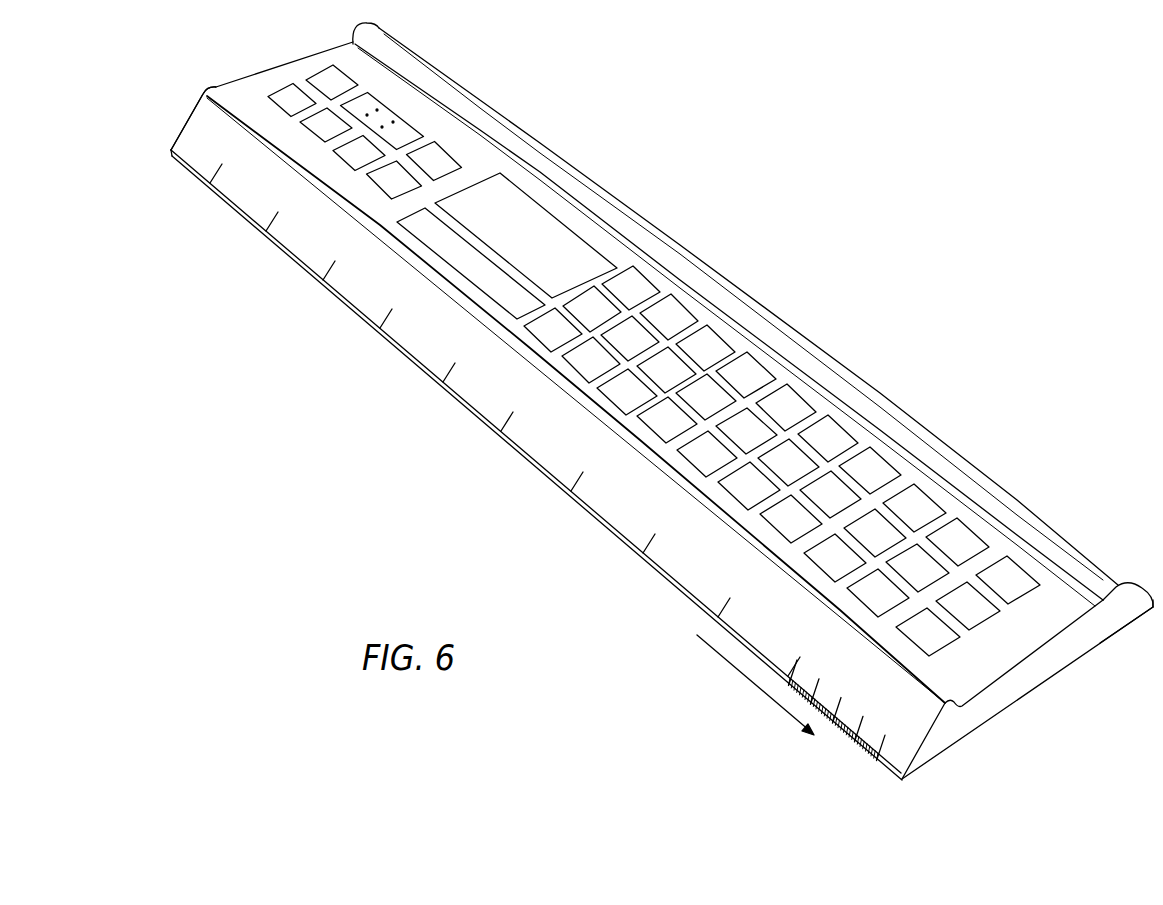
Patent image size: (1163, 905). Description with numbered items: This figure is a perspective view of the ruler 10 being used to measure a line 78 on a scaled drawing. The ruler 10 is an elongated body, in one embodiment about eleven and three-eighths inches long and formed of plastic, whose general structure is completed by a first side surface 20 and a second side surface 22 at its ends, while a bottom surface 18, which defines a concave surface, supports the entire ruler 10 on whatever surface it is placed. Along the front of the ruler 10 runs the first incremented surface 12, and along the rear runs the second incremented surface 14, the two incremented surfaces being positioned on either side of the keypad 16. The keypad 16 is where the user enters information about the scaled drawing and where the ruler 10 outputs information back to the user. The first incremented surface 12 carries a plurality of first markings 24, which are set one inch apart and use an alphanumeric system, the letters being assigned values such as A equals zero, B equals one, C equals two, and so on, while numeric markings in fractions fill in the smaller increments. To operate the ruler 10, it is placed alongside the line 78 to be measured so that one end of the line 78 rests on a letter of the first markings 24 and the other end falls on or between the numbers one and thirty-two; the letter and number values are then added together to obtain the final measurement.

The ruler 10 is at (774, 203).
The first incremented surface 12 is at (687, 568).
The second incremented surface 14 is at (937, 440).
The keypad 16 is at (1062, 610).
The bottom surface 18 is at (1027, 692).
The first side surface 20 is at (1067, 662).
The second side surface 22 is at (192, 112).
The first markings 24 is at (658, 518).
The line 78 is at (752, 682).